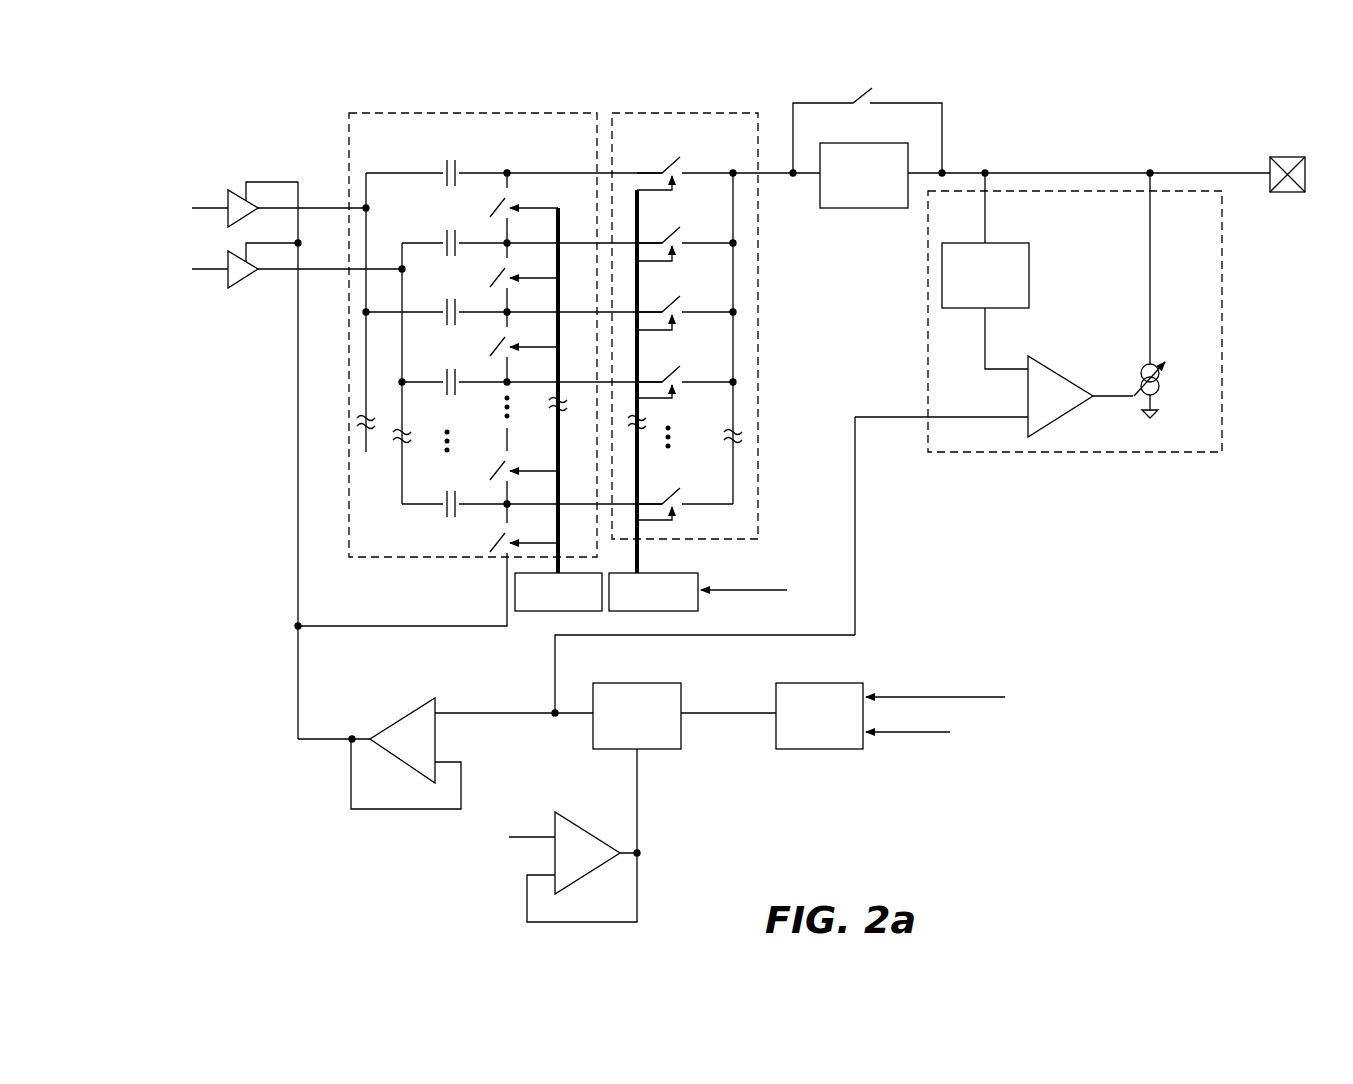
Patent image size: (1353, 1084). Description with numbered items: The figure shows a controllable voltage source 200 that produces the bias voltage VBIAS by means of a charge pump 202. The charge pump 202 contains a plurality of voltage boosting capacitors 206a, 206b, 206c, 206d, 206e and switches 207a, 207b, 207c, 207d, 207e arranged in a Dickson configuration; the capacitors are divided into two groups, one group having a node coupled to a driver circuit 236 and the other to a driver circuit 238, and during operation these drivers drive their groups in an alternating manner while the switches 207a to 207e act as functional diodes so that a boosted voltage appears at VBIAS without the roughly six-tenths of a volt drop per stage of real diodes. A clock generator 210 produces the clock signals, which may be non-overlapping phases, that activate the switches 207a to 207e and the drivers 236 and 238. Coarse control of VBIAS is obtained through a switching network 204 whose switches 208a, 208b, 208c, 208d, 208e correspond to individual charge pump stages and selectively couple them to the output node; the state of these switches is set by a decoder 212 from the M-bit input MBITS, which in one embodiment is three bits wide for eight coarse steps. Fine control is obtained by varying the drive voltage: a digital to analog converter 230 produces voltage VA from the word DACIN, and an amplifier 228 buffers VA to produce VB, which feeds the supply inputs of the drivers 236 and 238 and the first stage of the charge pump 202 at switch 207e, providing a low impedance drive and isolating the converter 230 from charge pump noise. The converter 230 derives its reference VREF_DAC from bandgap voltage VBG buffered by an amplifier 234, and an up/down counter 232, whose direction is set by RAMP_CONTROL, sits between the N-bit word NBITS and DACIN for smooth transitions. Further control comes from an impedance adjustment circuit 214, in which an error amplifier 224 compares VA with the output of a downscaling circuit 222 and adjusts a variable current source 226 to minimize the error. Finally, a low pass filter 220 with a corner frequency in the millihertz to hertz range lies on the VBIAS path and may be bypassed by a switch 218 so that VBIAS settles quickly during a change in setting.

The controllable voltage source 200 is at (152, 132).
The charge pump 202 is at (483, 113).
The switching network 204 is at (650, 113).
The voltage boosting capacitor 206a is at (442, 172).
The voltage boosting capacitor 206b is at (442, 242).
The voltage boosting capacitor 206c is at (442, 311).
The voltage boosting capacitor 206d is at (442, 380).
The voltage boosting capacitor 206e is at (442, 504).
The switch 207a is at (512, 204).
The switch 207b is at (502, 280).
The switch 207c is at (502, 350).
The switch 207d is at (502, 473).
The switch 207e is at (502, 546).
The switch 208a is at (676, 168).
The switch 208b is at (676, 238).
The switch 208c is at (676, 307).
The switch 208d is at (676, 376).
The switch 208e is at (676, 499).
The clock generator 210 is at (563, 611).
The decoder 212 is at (658, 575).
The impedance adjustment circuit 214 is at (1222, 262).
The switch 218 is at (878, 94).
The low pass filter 220 is at (858, 208).
The downscaling circuit 222 is at (1019, 243).
The error amplifier 224 is at (1047, 366).
The variable current source 226 is at (1164, 380).
The amplifier 228 is at (396, 720).
The digital to analog converter 230 is at (648, 683).
The up/down counter 232 is at (818, 683).
The amplifier 234 is at (567, 818).
The driver circuit 236 is at (228, 198).
The driver circuit 238 is at (228, 286).